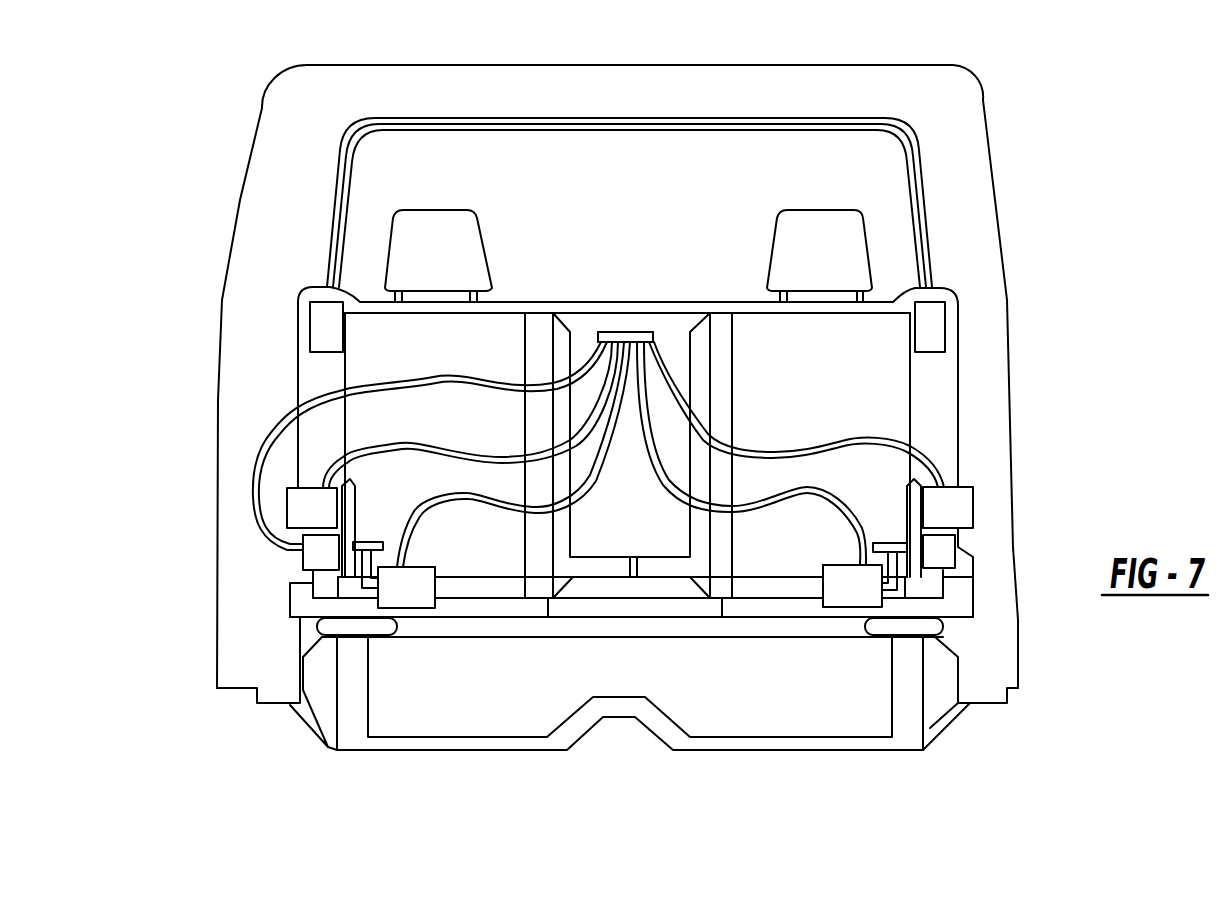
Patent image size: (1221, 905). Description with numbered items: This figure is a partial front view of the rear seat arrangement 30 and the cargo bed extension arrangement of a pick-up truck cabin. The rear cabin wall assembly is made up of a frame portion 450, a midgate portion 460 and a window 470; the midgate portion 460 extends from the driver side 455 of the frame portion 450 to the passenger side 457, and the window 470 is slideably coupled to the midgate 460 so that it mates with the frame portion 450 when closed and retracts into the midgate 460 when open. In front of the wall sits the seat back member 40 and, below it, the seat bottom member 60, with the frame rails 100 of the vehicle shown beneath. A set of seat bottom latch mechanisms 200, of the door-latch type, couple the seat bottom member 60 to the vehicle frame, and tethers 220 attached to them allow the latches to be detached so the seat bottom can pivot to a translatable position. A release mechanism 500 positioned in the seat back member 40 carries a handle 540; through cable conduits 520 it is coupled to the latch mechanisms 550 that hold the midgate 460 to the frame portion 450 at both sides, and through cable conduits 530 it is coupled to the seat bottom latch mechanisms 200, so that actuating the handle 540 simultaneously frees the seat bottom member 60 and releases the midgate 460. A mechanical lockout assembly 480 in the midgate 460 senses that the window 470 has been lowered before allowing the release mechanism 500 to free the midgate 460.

The rear seat arrangement 30 is at (625, 626).
The seat back member 40 is at (908, 413).
The seat bottom member 60 is at (540, 585).
The frame rails 100 is at (352, 702).
The seat bottom latch mechanisms 200 is at (428, 590).
The tethers 220 is at (370, 543).
The frame portion 450 is at (733, 97).
The driver side 455 is at (963, 203).
The passenger side 457 is at (270, 218).
The midgate portion 460 is at (303, 358).
The window 470 is at (530, 120).
The mechanical lockout assembly 480 is at (303, 553).
The release mechanism 500 is at (590, 338).
The cable conduits 520 is at (502, 457).
The cable conduits 530 is at (598, 470).
The handle 540 is at (664, 338).
The latch mechanisms 550 is at (307, 488).